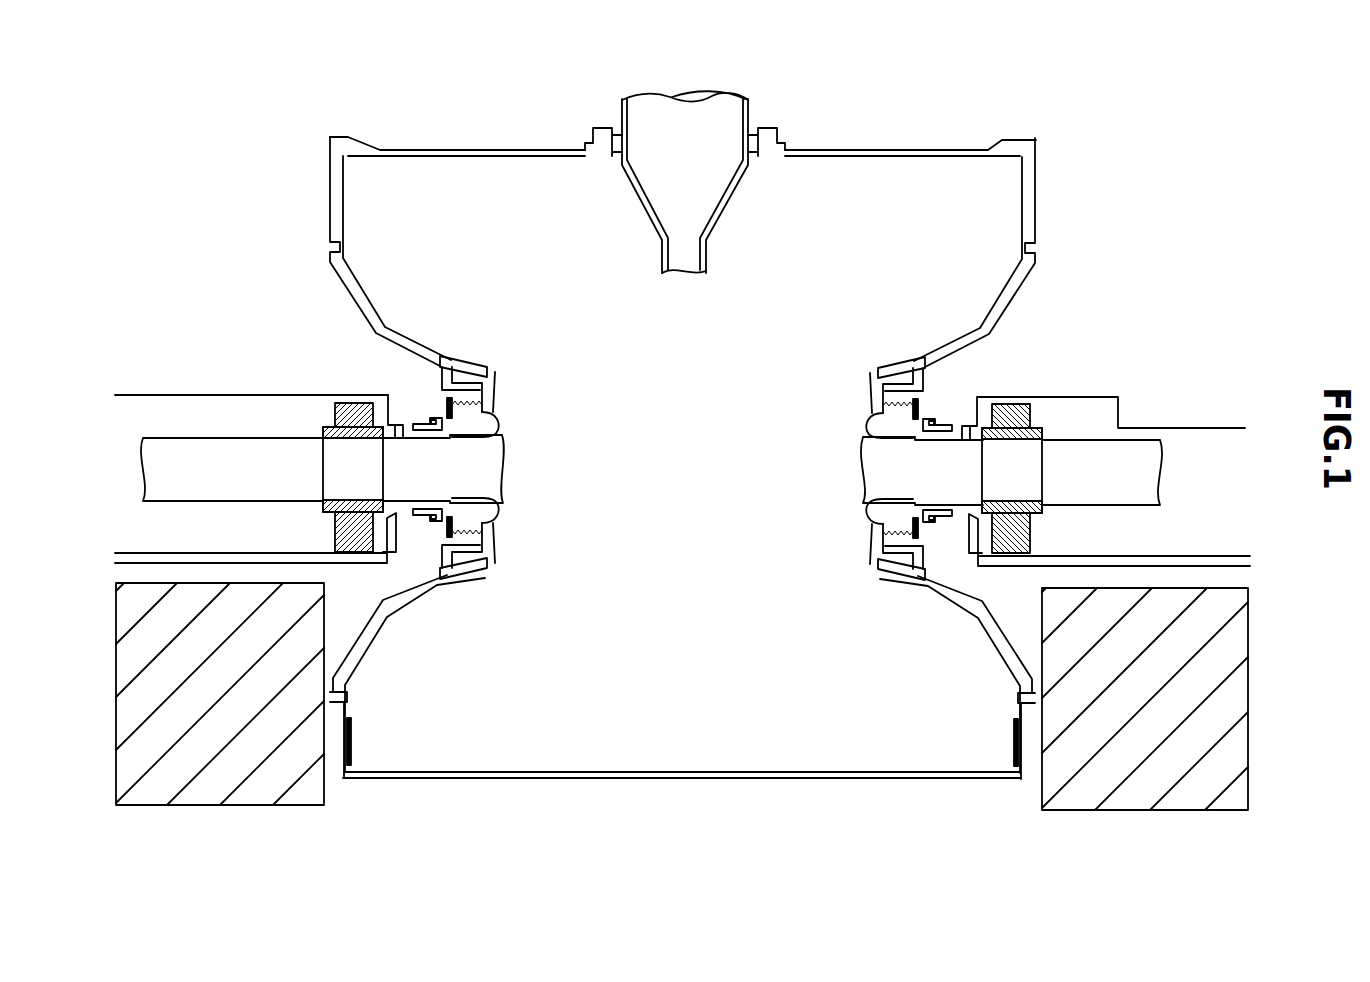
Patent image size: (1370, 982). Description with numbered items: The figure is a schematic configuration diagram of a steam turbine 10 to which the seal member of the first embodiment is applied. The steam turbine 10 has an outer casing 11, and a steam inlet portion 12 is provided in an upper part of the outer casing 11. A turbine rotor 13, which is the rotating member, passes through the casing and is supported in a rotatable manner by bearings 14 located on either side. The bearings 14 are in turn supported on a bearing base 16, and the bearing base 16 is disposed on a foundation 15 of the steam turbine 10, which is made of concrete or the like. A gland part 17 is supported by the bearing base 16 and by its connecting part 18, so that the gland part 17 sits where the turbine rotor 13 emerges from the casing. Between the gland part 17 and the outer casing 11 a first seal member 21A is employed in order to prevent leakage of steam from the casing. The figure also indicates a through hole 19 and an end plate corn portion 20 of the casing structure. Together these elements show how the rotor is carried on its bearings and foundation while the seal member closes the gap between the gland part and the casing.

The steam turbine 10 is at (826, 84).
The outer casing 11 is at (995, 149).
The steam inlet portion 12 is at (619, 112).
The turbine rotor 13 is at (205, 437).
The bearings 14 is at (315, 417).
The foundation 15 is at (200, 757).
The bearing base 16 is at (216, 394).
The gland part 17 is at (418, 404).
The connecting part 18 is at (403, 537).
The through hole 19 is at (378, 388).
The end plate corn portion 20 is at (1010, 263).
The first seal member 21A is at (431, 390).